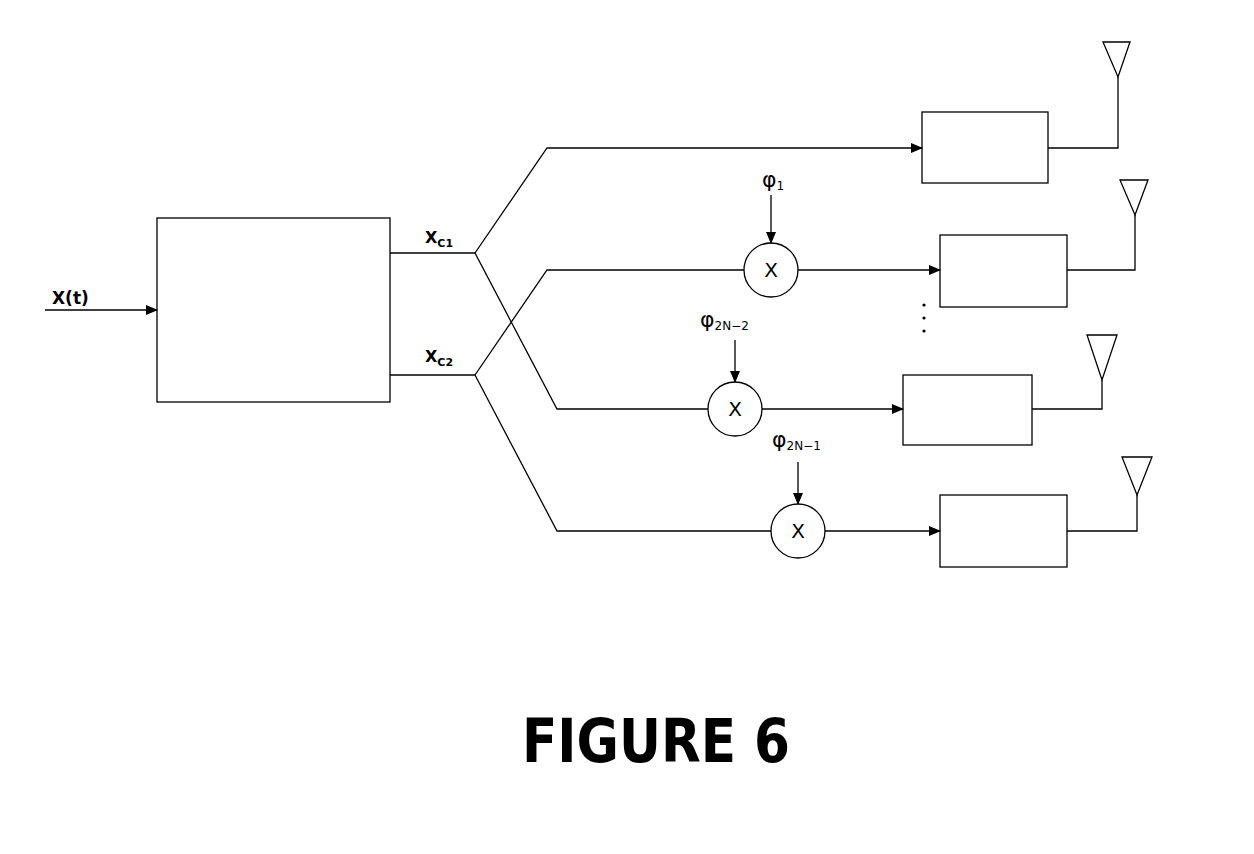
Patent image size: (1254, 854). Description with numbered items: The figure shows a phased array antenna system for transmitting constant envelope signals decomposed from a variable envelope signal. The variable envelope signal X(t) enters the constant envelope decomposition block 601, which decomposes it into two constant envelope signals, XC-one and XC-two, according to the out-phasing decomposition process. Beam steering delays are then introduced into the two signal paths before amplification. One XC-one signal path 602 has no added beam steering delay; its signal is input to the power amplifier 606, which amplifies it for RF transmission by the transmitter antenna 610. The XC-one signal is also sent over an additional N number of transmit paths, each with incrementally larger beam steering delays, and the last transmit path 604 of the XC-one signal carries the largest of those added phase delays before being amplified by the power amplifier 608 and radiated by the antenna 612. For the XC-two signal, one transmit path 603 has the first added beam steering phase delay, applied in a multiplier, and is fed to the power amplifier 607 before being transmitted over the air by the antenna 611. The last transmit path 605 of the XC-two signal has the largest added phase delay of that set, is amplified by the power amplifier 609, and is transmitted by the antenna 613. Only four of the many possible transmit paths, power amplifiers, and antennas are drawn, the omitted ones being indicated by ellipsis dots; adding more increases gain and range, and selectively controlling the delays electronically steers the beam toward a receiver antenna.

The constant envelope decomposition block 601 is at (273, 310).
The XC1 signal path 602 is at (650, 146).
The XC2 transmit path 603 is at (650, 268).
The last transmit path of the XC1 signal 604 is at (650, 407).
The last transmit path of the XC2 signal 605 is at (650, 529).
The power amplifier 606 is at (985, 147).
The power amplifier 607 is at (1003, 271).
The power amplifier 608 is at (967, 410).
The power amplifier 609 is at (1003, 531).
The transmitter antenna 610 is at (1126, 60).
The antenna 611 is at (1143, 200).
The antenna 612 is at (1110, 353).
The antenna 613 is at (1145, 475).